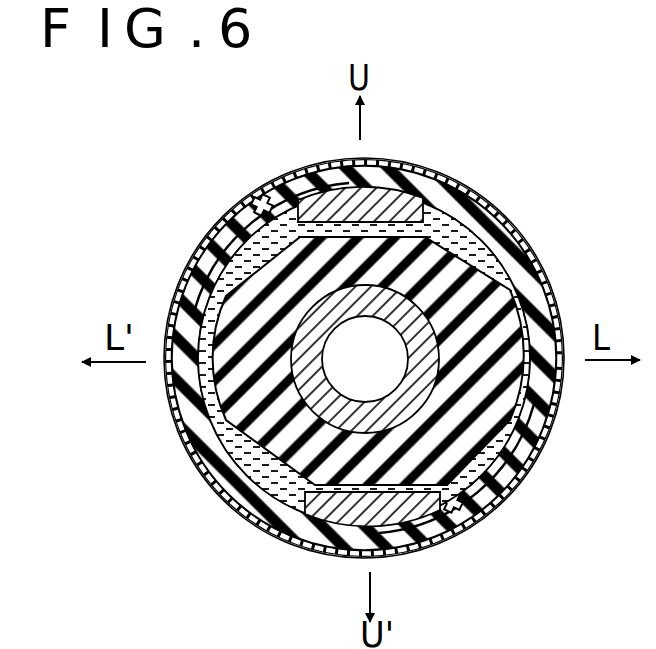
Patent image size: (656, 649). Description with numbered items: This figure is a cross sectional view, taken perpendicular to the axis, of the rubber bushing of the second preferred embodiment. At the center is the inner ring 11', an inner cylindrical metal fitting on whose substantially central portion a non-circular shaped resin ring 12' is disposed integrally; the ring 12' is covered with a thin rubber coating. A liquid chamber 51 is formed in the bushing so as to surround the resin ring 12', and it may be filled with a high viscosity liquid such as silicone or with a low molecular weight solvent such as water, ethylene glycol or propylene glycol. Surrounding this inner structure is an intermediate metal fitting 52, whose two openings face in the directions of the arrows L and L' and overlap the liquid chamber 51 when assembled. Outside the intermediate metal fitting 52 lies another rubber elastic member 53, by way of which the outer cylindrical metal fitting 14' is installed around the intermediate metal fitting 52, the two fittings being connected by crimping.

The inner ring 11' is at (411, 356).
The resin ring 12' is at (394, 358).
The outer cylindrical metal fitting 14' is at (376, 358).
The liquid chamber 51 is at (210, 410).
The intermediate metal fitting 52 is at (405, 167).
The rubber elastic member 53 is at (545, 450).